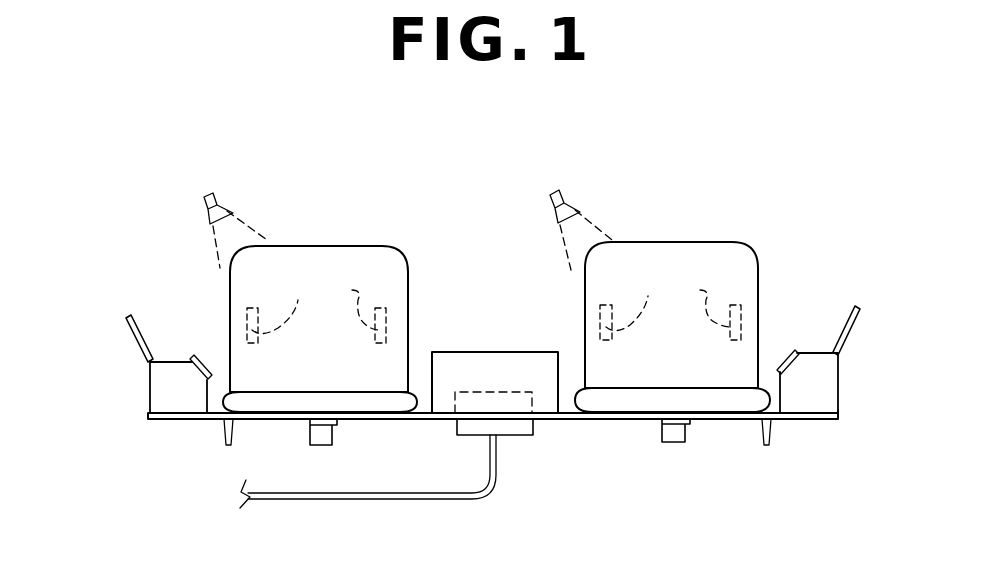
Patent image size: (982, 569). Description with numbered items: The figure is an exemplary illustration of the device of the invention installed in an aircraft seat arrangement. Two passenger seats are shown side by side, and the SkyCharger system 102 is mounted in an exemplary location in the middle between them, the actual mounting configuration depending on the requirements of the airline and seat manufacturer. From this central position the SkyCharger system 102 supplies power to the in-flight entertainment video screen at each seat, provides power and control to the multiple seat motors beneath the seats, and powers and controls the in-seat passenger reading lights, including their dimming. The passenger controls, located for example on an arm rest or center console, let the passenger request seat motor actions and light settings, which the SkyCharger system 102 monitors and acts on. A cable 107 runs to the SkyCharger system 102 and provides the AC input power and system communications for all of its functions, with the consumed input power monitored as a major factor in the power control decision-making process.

The SkyCharger system 102 is at (478, 352).
The cable 107 is at (358, 500).